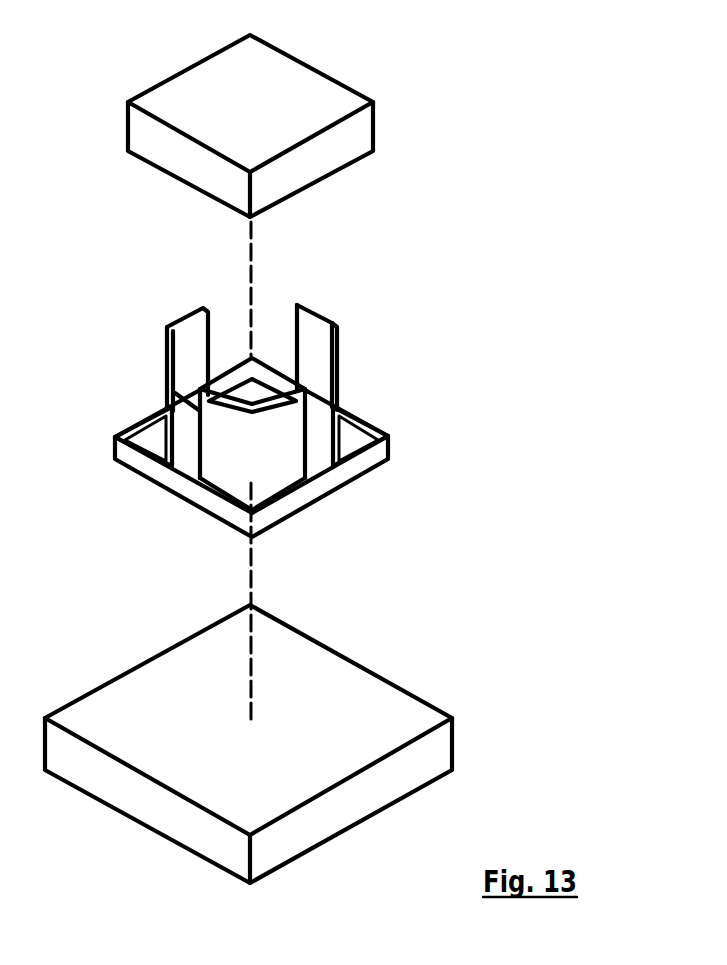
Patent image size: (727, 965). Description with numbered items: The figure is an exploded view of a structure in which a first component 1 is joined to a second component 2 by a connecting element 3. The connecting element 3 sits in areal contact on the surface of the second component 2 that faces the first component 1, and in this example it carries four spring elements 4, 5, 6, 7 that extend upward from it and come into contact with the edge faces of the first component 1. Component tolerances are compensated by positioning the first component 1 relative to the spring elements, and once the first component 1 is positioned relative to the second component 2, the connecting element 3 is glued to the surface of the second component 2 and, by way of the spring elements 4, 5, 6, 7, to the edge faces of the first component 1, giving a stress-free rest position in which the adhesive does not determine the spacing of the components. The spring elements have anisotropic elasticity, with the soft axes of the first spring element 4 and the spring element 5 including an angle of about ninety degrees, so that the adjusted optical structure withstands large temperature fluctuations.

The first component 1 is at (343, 101).
The second component 2 is at (377, 680).
The connecting element 3 is at (377, 440).
The first spring element 4 is at (320, 407).
The spring element 5 is at (187, 438).
The spring element 6 is at (333, 327).
The spring element 7 is at (187, 332).